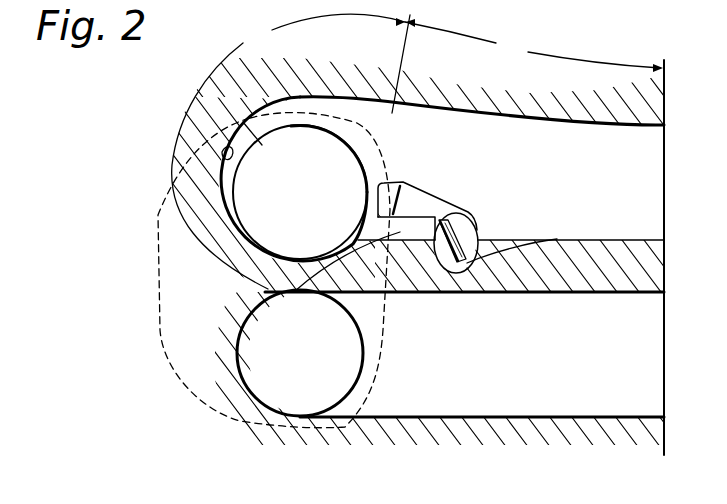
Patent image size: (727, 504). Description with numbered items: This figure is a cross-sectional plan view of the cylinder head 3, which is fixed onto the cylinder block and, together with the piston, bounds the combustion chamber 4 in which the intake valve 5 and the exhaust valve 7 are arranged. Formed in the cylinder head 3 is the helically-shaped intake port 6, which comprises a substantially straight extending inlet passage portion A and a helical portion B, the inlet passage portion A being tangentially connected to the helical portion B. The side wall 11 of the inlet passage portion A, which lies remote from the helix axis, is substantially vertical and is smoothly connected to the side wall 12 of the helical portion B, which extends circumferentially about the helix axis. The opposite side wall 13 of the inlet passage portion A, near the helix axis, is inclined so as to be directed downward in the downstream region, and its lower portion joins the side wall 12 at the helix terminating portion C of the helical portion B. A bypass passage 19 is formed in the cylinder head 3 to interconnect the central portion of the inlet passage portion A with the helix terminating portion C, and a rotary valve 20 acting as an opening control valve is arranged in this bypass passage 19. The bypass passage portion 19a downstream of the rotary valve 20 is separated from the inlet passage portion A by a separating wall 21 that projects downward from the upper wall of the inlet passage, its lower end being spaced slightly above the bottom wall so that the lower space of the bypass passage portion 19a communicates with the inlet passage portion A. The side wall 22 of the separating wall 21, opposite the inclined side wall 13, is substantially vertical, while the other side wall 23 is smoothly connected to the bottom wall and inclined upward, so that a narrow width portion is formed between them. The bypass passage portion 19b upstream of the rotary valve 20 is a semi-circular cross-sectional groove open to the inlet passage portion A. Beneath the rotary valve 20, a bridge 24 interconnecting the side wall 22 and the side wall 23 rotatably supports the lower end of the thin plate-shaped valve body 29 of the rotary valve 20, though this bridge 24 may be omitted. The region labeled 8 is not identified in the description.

The cylinder head 3 is at (542, 428).
The combustion chamber 4 is at (160, 247).
The intake valve 5 is at (245, 121).
The helically-shaped intake port 6 is at (473, 159).
The exhaust valve 7 is at (241, 416).
The body portion 8 is at (488, 385).
The side wall of the inlet passage portion 11 is at (560, 126).
The side wall of the helical portion 12 is at (222, 156).
The inclined side wall 13 is at (445, 187).
The bypass passage 19 is at (399, 236).
The bypass passage portion 19a is at (411, 232).
The bypass passage portion 19b is at (512, 243).
The rotary valve 20 is at (447, 262).
The separating wall 21 is at (400, 185).
The side wall of the bypass passage portion 22 is at (374, 219).
The side wall of the bypass passage portion 23 is at (352, 316).
The bridge 24 is at (470, 245).
The valve body 29 is at (476, 230).
The inlet passage portion A is at (534, 45).
The helical portion B is at (328, 63).
The helix terminating portion C is at (366, 189).